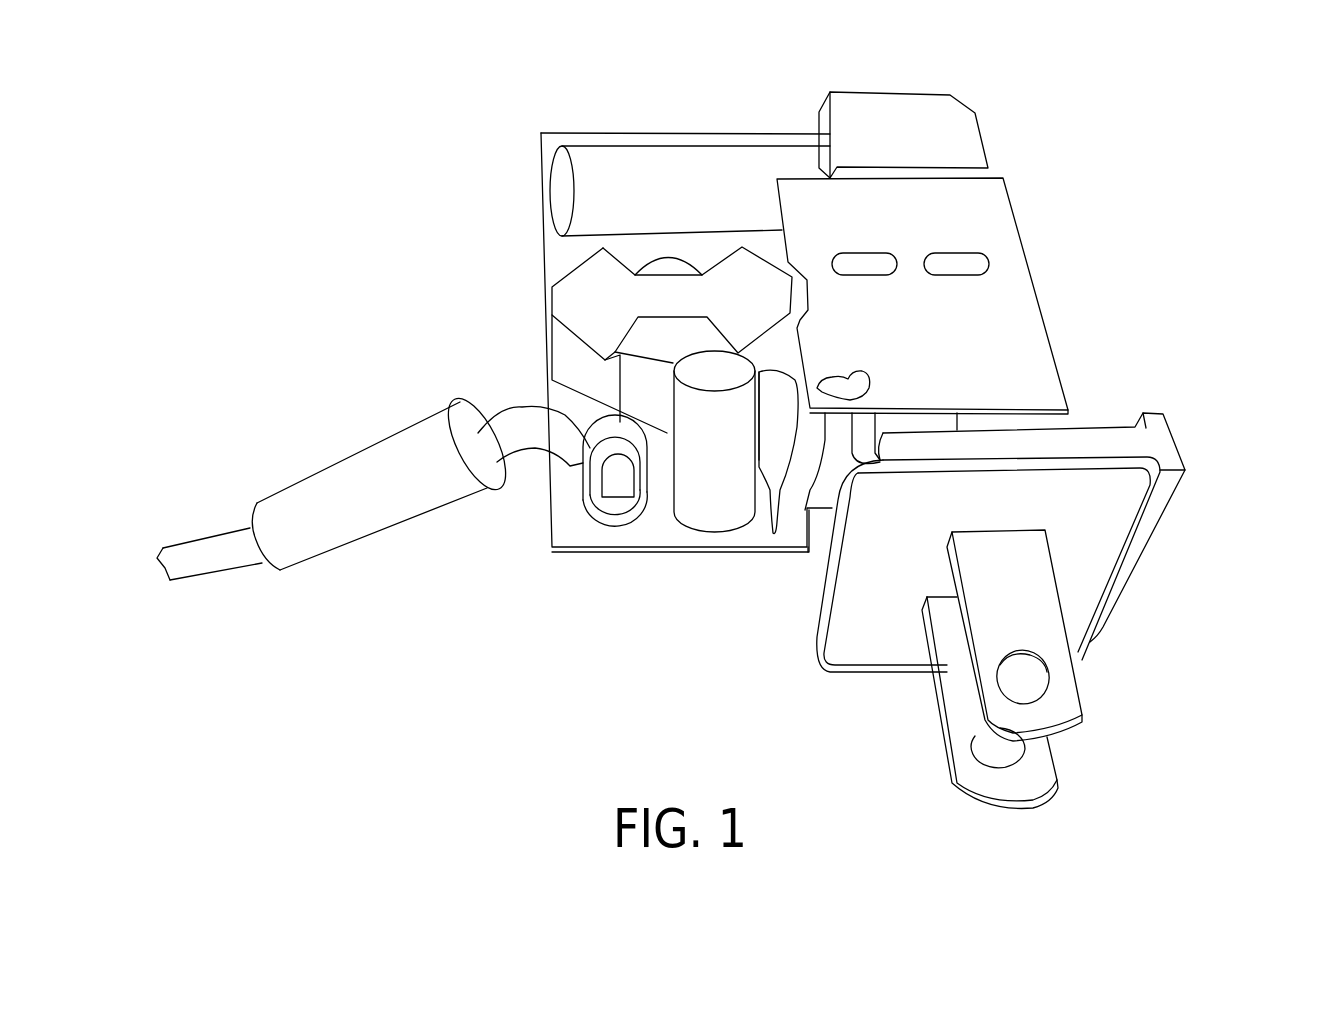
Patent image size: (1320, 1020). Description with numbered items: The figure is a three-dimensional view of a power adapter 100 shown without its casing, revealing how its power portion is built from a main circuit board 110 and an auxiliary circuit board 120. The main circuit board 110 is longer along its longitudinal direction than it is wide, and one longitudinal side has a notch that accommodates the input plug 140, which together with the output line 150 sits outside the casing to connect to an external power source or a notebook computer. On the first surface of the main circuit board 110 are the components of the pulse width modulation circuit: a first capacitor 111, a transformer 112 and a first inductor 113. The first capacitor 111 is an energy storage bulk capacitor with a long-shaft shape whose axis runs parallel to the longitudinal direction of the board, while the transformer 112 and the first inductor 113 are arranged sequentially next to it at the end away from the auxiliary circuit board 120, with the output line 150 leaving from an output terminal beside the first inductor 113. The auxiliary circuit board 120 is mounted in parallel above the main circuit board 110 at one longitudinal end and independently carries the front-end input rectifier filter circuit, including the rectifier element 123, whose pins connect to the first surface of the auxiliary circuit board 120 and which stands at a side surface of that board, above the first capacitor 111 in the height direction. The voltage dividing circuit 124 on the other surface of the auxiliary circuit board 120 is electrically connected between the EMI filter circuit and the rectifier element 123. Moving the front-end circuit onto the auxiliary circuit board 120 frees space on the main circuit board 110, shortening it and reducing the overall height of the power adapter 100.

The power adapter 100 is at (184, 99).
The main circuit board 110 is at (663, 525).
The first capacitor 111 is at (676, 173).
The transformer 112 is at (603, 290).
The first inductor 113 is at (620, 472).
The auxiliary circuit board 120 is at (971, 289).
The rectifier element 123 is at (896, 125).
The voltage dividing circuit 124 is at (872, 265).
The input plug 140 is at (1112, 550).
The output line 150 is at (352, 488).